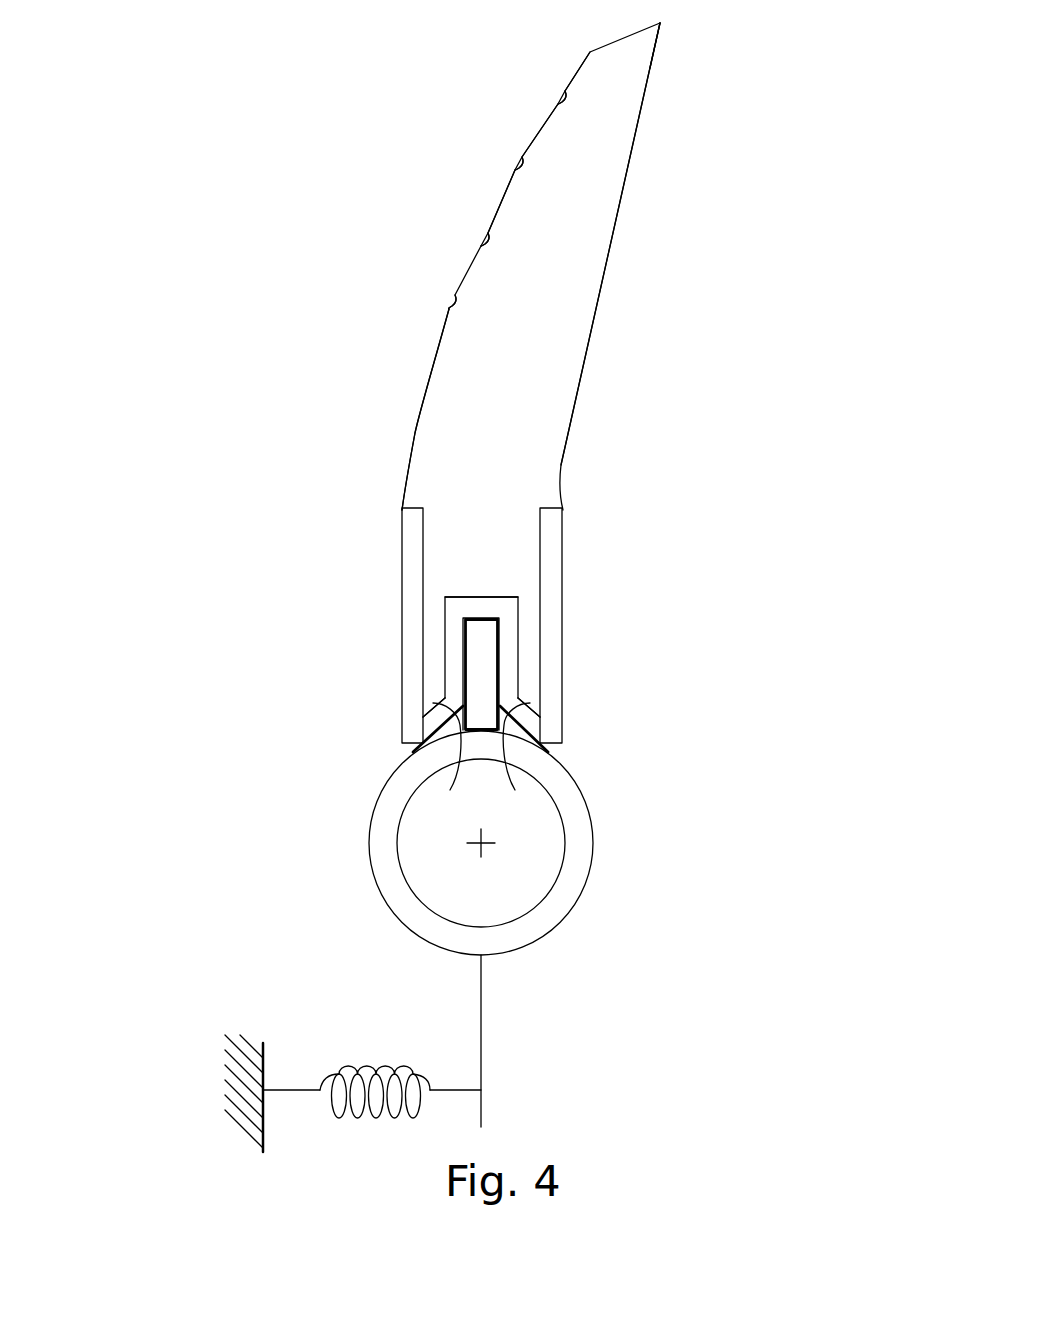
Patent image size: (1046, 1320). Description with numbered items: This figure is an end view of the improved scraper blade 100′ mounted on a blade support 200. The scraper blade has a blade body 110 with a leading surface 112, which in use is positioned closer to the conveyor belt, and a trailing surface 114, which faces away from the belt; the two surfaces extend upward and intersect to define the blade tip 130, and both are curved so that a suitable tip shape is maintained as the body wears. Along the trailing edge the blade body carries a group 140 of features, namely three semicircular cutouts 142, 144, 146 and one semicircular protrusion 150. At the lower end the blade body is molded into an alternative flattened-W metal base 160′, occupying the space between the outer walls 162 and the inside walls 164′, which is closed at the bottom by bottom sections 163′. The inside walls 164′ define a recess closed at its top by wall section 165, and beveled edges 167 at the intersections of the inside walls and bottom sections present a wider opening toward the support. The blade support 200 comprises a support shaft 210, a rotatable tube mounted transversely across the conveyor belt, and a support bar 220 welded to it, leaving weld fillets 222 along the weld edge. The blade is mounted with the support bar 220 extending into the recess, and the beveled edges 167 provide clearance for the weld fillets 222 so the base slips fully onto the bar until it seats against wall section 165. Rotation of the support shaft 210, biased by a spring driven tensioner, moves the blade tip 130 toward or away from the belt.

The scraper blade 100′ is at (504, 397).
The blade body 110 is at (533, 382).
The leading surface 112 is at (595, 322).
The trailing surface 114 is at (413, 433).
The blade tip 130 is at (660, 23).
The notches 140 is at (495, 12).
The semi circular cutout 142 is at (562, 99).
The semi circular cutout 144 is at (521, 166).
The semi circular cutout 146 is at (487, 237).
The semi circular protrusion 150 is at (453, 303).
The metal base 160′ is at (494, 631).
The outer walls 162 is at (400, 526).
The bottom sections 163′ is at (403, 746).
The inside walls 164′ is at (445, 630).
The wall section 165 is at (472, 597).
The beveled edges 167 is at (440, 698).
The blade support 200 is at (457, 929).
The support shaft 210 is at (527, 942).
The support bar 220 is at (478, 662).
The weld fillets 222 is at (450, 790).